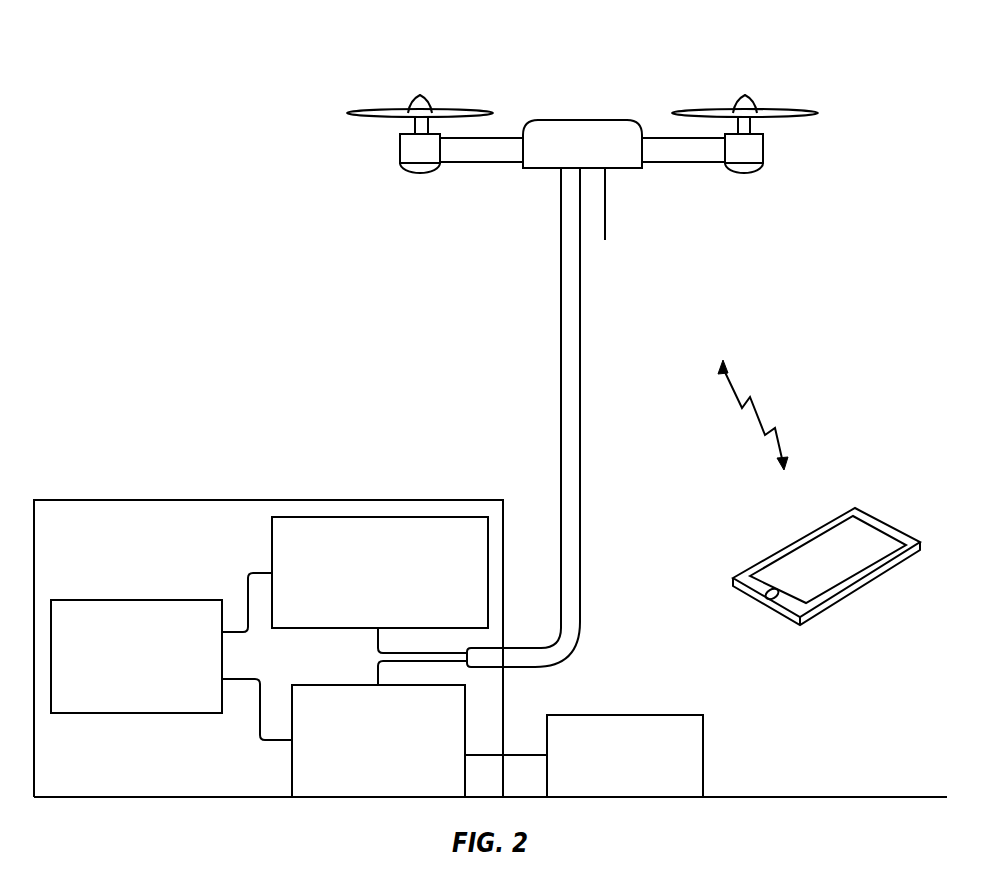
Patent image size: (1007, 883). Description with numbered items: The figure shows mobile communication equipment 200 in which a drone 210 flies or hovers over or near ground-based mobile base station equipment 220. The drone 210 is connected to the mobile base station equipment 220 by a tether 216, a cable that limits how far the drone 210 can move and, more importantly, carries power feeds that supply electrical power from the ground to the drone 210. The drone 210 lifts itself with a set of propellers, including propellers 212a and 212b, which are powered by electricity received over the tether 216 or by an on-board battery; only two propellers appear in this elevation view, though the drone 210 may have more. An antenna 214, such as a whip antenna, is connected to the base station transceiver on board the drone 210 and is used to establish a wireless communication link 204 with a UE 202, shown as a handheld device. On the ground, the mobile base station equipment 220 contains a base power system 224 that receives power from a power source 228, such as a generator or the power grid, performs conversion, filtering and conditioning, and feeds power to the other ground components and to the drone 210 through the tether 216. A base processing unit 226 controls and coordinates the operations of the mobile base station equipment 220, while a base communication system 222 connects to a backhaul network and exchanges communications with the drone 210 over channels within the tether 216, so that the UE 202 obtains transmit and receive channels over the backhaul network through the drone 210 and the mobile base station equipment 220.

The mobile communication equipment 200 is at (221, 67).
The UE 202 is at (826, 523).
The wireless communication link 204 is at (752, 400).
The drone 210 is at (553, 120).
The propeller 212a is at (754, 97).
The propeller 212b is at (408, 97).
The antenna 214 is at (607, 202).
The tether 216 is at (560, 373).
The mobile base station equipment 220 is at (175, 500).
The base communication system 222 is at (272, 540).
The base power system 224 is at (292, 770).
The base processing unit 226 is at (97, 600).
The power source 228 is at (704, 756).